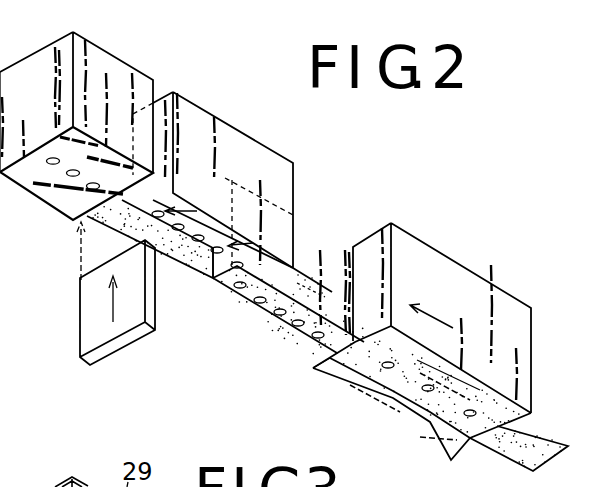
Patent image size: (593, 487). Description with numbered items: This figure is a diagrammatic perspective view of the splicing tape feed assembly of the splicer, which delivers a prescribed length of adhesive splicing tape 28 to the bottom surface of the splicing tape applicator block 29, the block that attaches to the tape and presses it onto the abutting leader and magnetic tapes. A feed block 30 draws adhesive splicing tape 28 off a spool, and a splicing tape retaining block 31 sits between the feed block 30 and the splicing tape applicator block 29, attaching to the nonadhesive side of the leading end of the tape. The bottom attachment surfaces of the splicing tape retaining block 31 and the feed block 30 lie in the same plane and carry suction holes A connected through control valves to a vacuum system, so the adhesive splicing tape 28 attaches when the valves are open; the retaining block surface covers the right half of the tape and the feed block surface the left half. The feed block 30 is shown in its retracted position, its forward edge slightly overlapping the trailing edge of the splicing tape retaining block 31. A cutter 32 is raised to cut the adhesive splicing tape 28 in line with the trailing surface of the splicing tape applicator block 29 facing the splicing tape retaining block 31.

The adhesive splicing tape 28 is at (194, 258).
The splicing tape applicator block 29 is at (118, 68).
The feed block 30 is at (477, 284).
The splicing tape retaining block 31 is at (237, 142).
The cutter 32 is at (88, 322).
The suction holes A is at (227, 285).